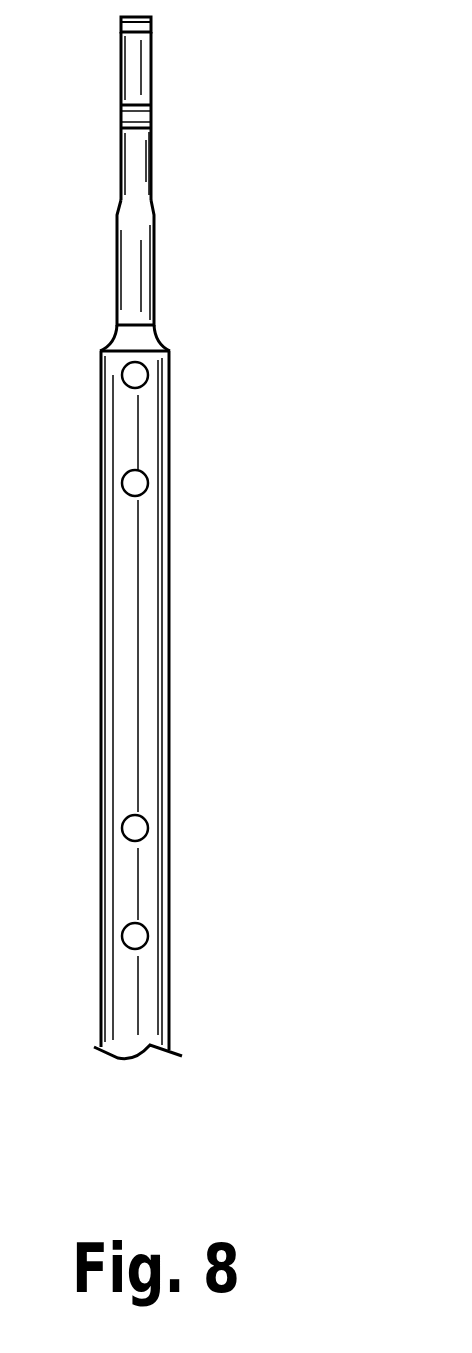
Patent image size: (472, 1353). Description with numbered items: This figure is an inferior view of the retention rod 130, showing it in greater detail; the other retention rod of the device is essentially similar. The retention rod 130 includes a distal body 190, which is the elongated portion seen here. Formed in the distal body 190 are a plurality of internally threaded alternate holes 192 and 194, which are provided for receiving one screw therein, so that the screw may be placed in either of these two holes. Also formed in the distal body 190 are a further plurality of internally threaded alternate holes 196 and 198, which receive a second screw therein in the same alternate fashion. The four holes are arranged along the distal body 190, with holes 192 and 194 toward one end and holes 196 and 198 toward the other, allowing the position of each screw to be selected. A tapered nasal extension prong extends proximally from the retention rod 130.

The retention rod 130 is at (197, 660).
The distal body 190 is at (170, 878).
The internally threaded alternate hole 192 is at (148, 375).
The internally threaded alternate hole 194 is at (148, 483).
The internally threaded alternate hole 196 is at (148, 824).
The internally threaded alternate hole 198 is at (148, 940).